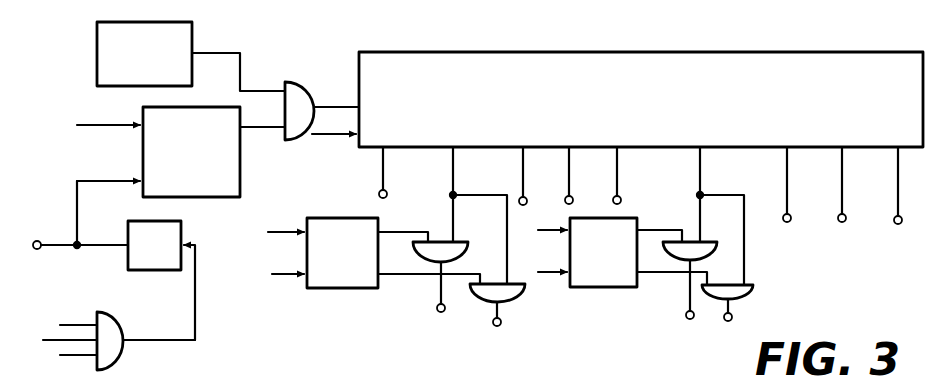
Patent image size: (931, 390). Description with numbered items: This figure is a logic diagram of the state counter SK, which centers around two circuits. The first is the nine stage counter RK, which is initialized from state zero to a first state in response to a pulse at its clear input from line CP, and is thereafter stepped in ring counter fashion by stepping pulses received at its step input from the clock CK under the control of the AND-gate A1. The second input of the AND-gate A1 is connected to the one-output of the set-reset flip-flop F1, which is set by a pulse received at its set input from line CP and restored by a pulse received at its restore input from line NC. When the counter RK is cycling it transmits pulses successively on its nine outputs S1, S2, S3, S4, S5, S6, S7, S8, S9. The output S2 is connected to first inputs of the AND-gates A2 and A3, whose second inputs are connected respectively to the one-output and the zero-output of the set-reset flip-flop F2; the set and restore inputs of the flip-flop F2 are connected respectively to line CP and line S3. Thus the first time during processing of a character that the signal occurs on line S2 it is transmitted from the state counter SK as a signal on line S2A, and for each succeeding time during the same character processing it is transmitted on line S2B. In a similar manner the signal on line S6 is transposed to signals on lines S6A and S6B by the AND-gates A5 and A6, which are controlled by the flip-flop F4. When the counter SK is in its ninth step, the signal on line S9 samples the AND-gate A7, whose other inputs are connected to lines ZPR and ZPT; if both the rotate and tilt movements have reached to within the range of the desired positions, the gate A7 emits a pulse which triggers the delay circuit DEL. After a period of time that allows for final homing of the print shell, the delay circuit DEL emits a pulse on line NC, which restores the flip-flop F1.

The clock CK is at (144, 54).
The set-reset flip-flop F1 is at (191, 152).
The line CP is at (113, 126).
The AND-gate A1 is at (300, 97).
The state counter SK is at (580, 24).
The nine stage counter RK is at (641, 99).
The output S1 is at (382, 168).
The output S2 is at (452, 177).
The output S3 is at (522, 162).
The output S4 is at (568, 174).
The output S5 is at (616, 164).
The output S6 is at (699, 174).
The output S7 is at (786, 171).
The output S8 is at (841, 186).
The output S9 is at (897, 188).
The set-reset flip-flop F2 is at (342, 253).
The AND-gate A2 is at (458, 243).
The AND-gate A3 is at (518, 296).
The line S2A is at (436, 302).
The line S2B is at (490, 320).
The flip-flop F4 is at (603, 252).
The AND-gate A5 is at (730, 230).
The AND-gate A6 is at (746, 292).
The line S6A is at (683, 312).
The line S6B is at (730, 323).
The line NC is at (60, 242).
The delay circuit DEL is at (154, 245).
The AND-gate A7 is at (123, 357).
The line ZPR is at (96, 290).
The line ZPT is at (80, 356).